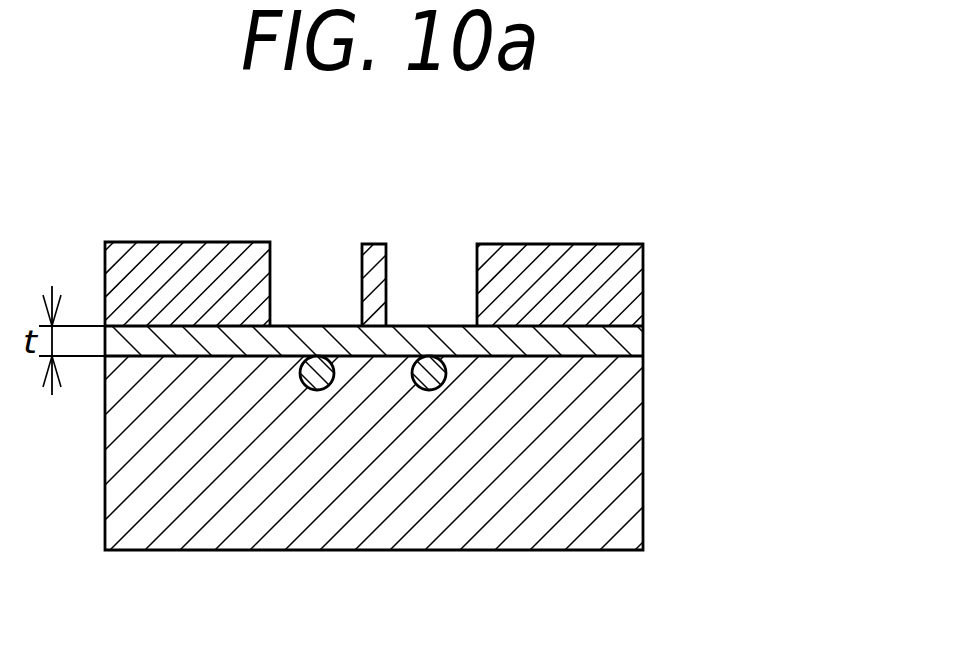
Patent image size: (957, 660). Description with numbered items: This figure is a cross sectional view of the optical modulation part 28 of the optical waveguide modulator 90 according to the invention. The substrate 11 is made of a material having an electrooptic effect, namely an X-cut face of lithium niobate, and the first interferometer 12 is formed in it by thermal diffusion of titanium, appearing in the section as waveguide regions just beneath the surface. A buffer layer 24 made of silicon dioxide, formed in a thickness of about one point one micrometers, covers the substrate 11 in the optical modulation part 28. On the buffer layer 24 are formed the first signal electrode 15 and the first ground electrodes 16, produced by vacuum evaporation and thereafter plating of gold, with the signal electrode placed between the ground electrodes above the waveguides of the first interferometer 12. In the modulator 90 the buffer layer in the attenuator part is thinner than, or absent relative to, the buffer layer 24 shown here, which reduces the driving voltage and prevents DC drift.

The substrate 11 is at (570, 483).
The first interferometer 12 is at (310, 356).
The first signal electrode 15 is at (379, 241).
The first ground electrodes 16 is at (186, 292).
The buffer layer 24 is at (615, 345).
The optical modulation part 28 is at (477, 357).
The optical waveguide modulator 90 is at (446, 357).